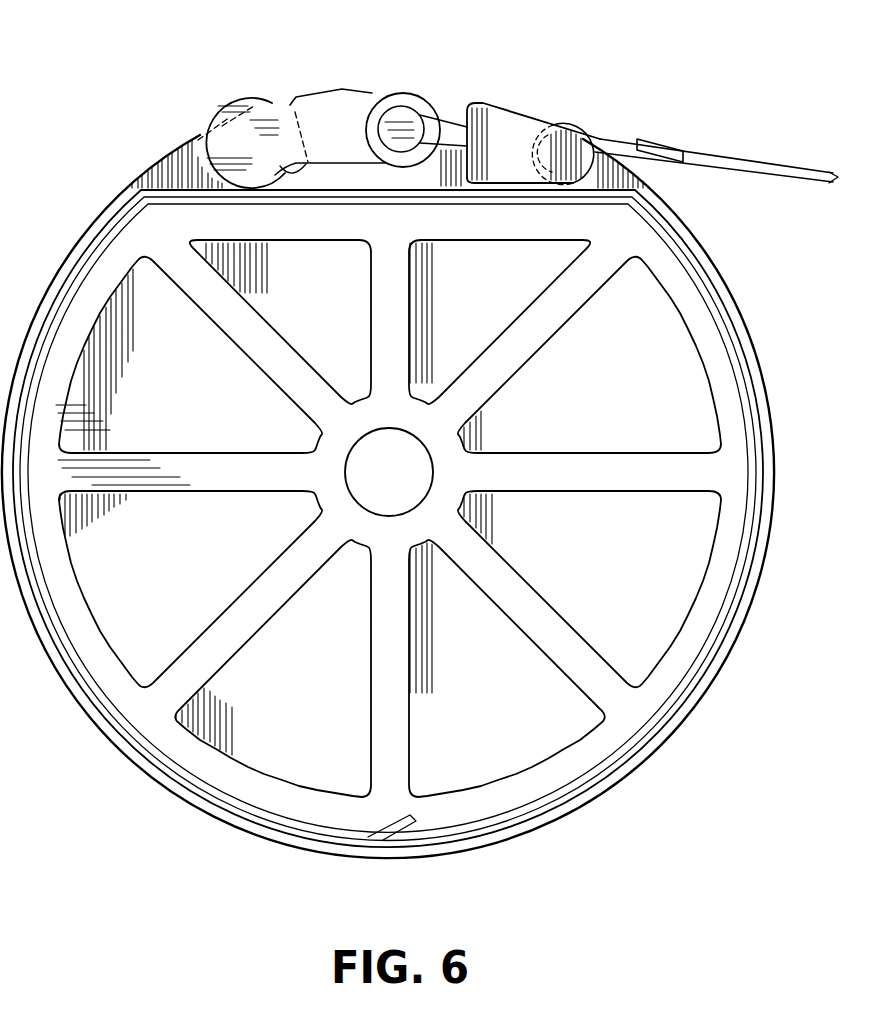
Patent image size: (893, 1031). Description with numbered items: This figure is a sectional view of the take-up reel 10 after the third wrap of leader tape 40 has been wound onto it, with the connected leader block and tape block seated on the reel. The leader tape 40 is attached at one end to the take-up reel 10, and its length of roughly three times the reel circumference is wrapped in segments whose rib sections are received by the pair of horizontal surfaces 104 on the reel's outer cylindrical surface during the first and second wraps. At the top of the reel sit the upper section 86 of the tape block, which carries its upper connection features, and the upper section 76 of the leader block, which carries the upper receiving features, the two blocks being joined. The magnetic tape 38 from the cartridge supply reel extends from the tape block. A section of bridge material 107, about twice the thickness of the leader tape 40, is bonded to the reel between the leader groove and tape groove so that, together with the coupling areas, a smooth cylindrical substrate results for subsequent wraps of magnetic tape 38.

The take-up reel 10 is at (158, 757).
The leader tape 40 is at (665, 742).
The horizontal surfaces 104 is at (183, 203).
The upper section 86 is at (258, 113).
The bridge material 107 is at (343, 92).
The upper section 76 is at (495, 120).
The magnetic tape 38 is at (748, 160).